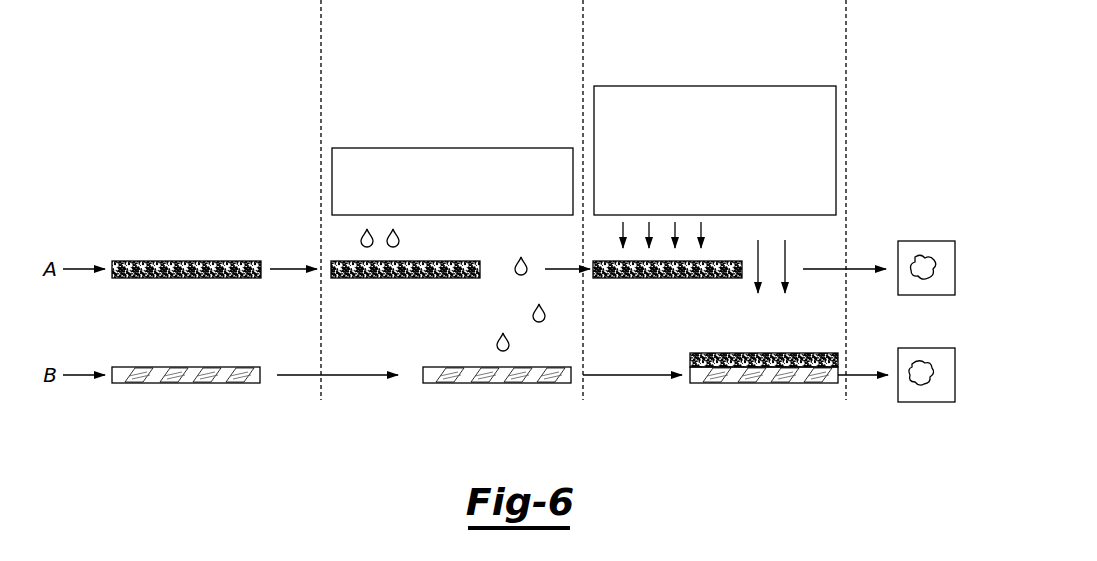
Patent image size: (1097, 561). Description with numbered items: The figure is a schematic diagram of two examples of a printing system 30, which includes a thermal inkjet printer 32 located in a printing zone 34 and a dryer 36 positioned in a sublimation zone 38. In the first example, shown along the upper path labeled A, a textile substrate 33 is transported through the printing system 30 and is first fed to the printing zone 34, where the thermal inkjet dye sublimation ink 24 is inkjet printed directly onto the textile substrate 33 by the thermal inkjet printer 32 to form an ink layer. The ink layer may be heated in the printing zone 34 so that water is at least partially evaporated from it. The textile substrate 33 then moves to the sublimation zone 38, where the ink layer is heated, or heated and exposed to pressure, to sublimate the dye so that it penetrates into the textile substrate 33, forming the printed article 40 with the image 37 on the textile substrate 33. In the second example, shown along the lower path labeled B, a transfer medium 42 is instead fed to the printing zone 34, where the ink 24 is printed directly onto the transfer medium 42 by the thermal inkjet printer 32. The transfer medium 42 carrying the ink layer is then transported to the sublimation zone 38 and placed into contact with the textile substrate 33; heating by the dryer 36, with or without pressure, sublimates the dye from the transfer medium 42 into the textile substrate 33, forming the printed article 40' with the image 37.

The printing system 30 is at (180, 44).
The thermal inkjet printer 32 is at (437, 189).
The textile substrate 33 is at (182, 261).
The printing zone 34 is at (437, 56).
The dryer 36 is at (701, 159).
The sublimation zone 38 is at (701, 53).
The thermal inkjet dye sublimation ink 24 is at (401, 240).
The transfer medium 42 is at (180, 367).
The image 37 is at (930, 259).
The printed article 40 is at (913, 218).
The printed article 40' is at (901, 414).